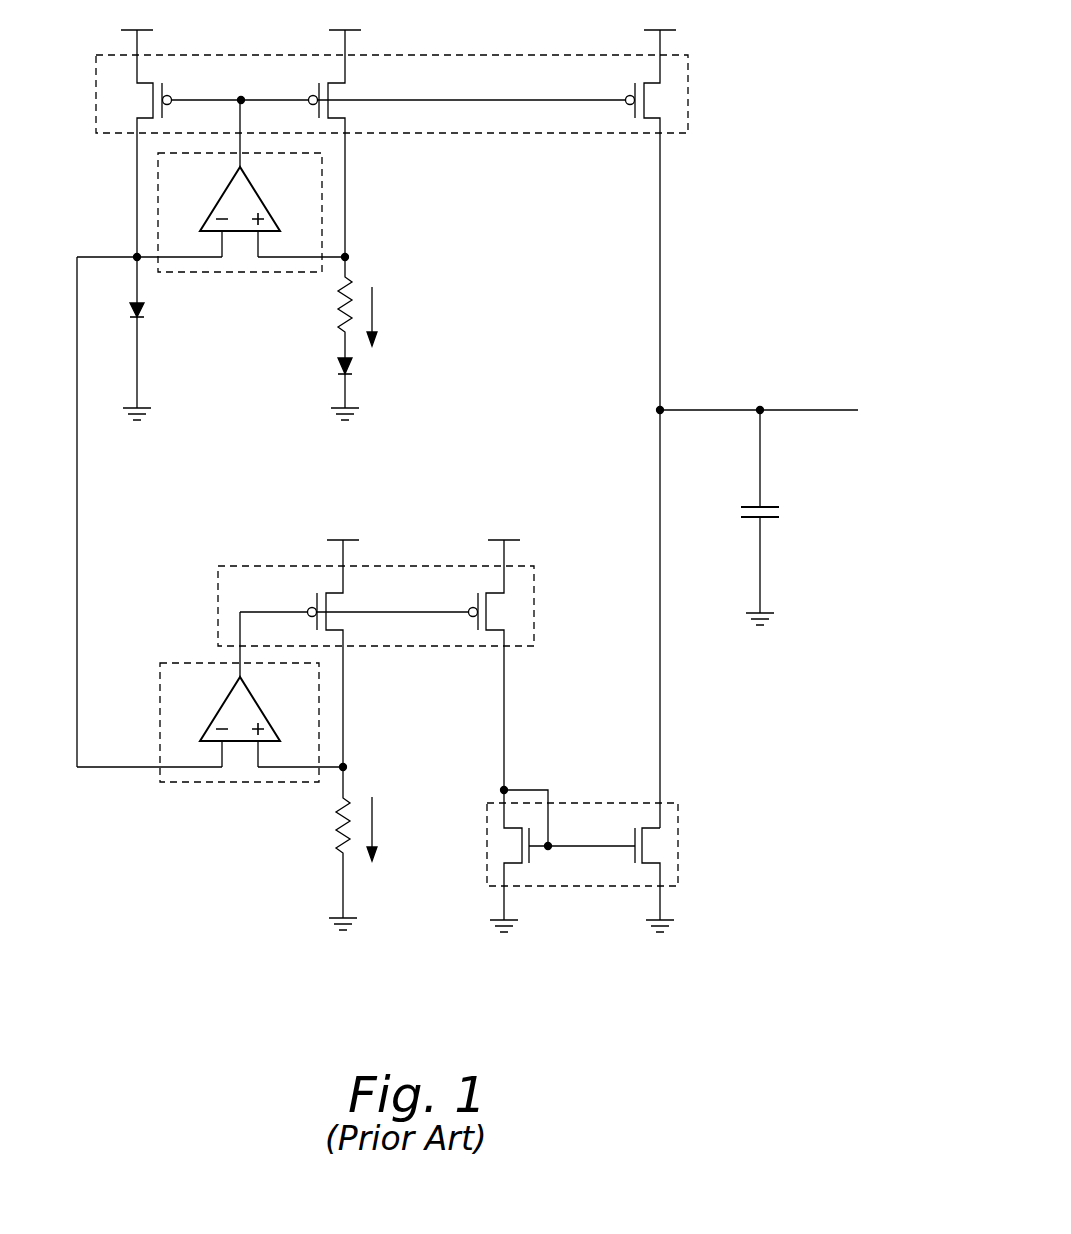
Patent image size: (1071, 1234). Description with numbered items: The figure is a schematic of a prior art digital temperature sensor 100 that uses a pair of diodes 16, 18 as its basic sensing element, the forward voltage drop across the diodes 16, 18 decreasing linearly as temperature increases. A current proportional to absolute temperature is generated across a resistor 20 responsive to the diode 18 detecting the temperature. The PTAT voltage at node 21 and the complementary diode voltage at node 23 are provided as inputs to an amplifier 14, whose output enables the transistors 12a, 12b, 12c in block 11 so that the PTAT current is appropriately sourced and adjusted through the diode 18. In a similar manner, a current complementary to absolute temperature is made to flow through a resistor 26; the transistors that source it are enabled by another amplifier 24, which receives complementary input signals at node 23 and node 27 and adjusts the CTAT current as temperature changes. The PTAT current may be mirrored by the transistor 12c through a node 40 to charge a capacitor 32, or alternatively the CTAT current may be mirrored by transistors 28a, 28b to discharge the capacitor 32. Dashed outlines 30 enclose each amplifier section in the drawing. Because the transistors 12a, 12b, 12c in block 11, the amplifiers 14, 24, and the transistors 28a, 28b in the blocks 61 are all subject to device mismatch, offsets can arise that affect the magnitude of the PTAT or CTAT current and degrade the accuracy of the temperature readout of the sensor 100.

The digital temperature sensor 100 is at (200, 890).
The block 11 is at (688, 107).
The transistor 12a is at (170, 89).
The transistor 12b is at (310, 89).
The transistor 12c is at (627, 89).
The amplifier 14 is at (257, 194).
The diode 16 is at (144, 310).
The diode 18 is at (338, 367).
The resistor 20 is at (338, 308).
The node 21 is at (345, 257).
The node 23 is at (137, 257).
The amplifier 24 is at (258, 703).
The resistor 26 is at (335, 823).
The node 27 is at (343, 767).
The transistor 28a is at (532, 862).
The transistor 28b is at (633, 833).
The amplifier block 30 is at (157, 182).
The capacitor 32 is at (762, 507).
The node 40 is at (660, 410).
The blocks 61 is at (534, 593).